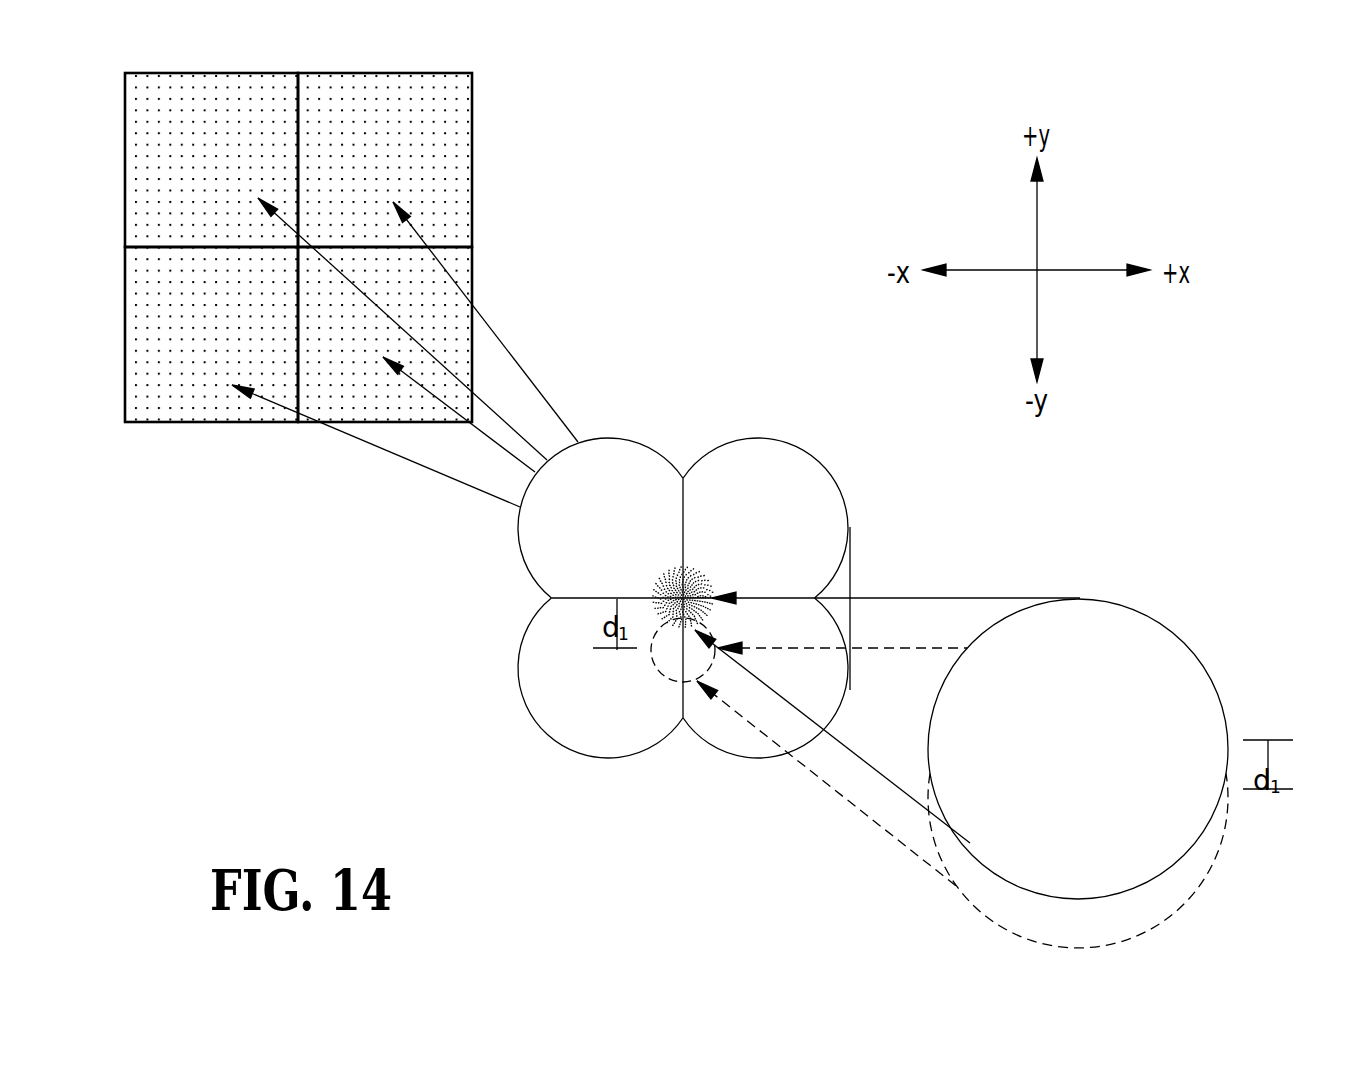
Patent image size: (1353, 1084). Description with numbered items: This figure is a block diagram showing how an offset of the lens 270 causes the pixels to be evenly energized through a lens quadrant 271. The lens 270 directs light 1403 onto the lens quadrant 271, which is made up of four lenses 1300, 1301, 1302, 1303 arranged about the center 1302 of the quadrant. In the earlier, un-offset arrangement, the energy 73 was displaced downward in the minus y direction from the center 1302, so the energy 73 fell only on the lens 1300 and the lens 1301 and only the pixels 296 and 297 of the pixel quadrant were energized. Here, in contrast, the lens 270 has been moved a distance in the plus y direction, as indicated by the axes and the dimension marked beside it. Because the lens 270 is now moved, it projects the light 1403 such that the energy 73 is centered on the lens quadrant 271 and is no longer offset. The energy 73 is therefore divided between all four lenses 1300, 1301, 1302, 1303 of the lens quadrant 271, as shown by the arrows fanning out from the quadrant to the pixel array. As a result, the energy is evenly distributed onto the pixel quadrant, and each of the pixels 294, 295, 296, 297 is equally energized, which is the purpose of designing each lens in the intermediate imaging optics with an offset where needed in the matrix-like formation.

The pixel 294 is at (230, 169).
The pixel 295 is at (402, 169).
The pixel 296 is at (225, 349).
The pixel 297 is at (407, 349).
The lens 1300 is at (598, 687).
The lens 1301 is at (837, 687).
The center of the lens quadrant 1302 is at (617, 532).
The lens 1303 is at (823, 532).
The lens quadrant 271 is at (799, 572).
The energy 73 is at (703, 580).
The light 1403 is at (910, 598).
The lens 270 is at (1098, 752).